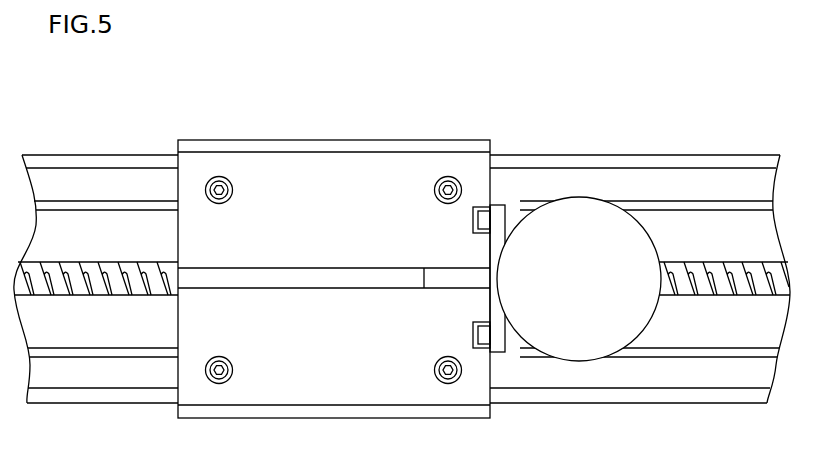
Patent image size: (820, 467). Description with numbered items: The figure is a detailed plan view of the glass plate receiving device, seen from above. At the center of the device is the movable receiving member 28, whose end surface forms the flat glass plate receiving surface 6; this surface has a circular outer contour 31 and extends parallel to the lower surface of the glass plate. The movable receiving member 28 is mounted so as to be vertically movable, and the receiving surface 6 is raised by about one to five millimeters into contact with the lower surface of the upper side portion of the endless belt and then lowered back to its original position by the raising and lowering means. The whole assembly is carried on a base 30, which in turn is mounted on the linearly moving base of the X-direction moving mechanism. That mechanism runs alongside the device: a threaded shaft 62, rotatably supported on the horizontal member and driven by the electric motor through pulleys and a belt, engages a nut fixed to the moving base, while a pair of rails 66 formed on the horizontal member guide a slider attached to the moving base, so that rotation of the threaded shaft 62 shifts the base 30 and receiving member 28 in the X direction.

The base 30 is at (353, 208).
The circular outer contour 31 is at (562, 198).
The glass plate receiving surface 6 is at (579, 230).
The pair of rails 66 is at (708, 187).
The threaded shaft 62 is at (110, 283).
The movable receiving member 28 is at (579, 272).